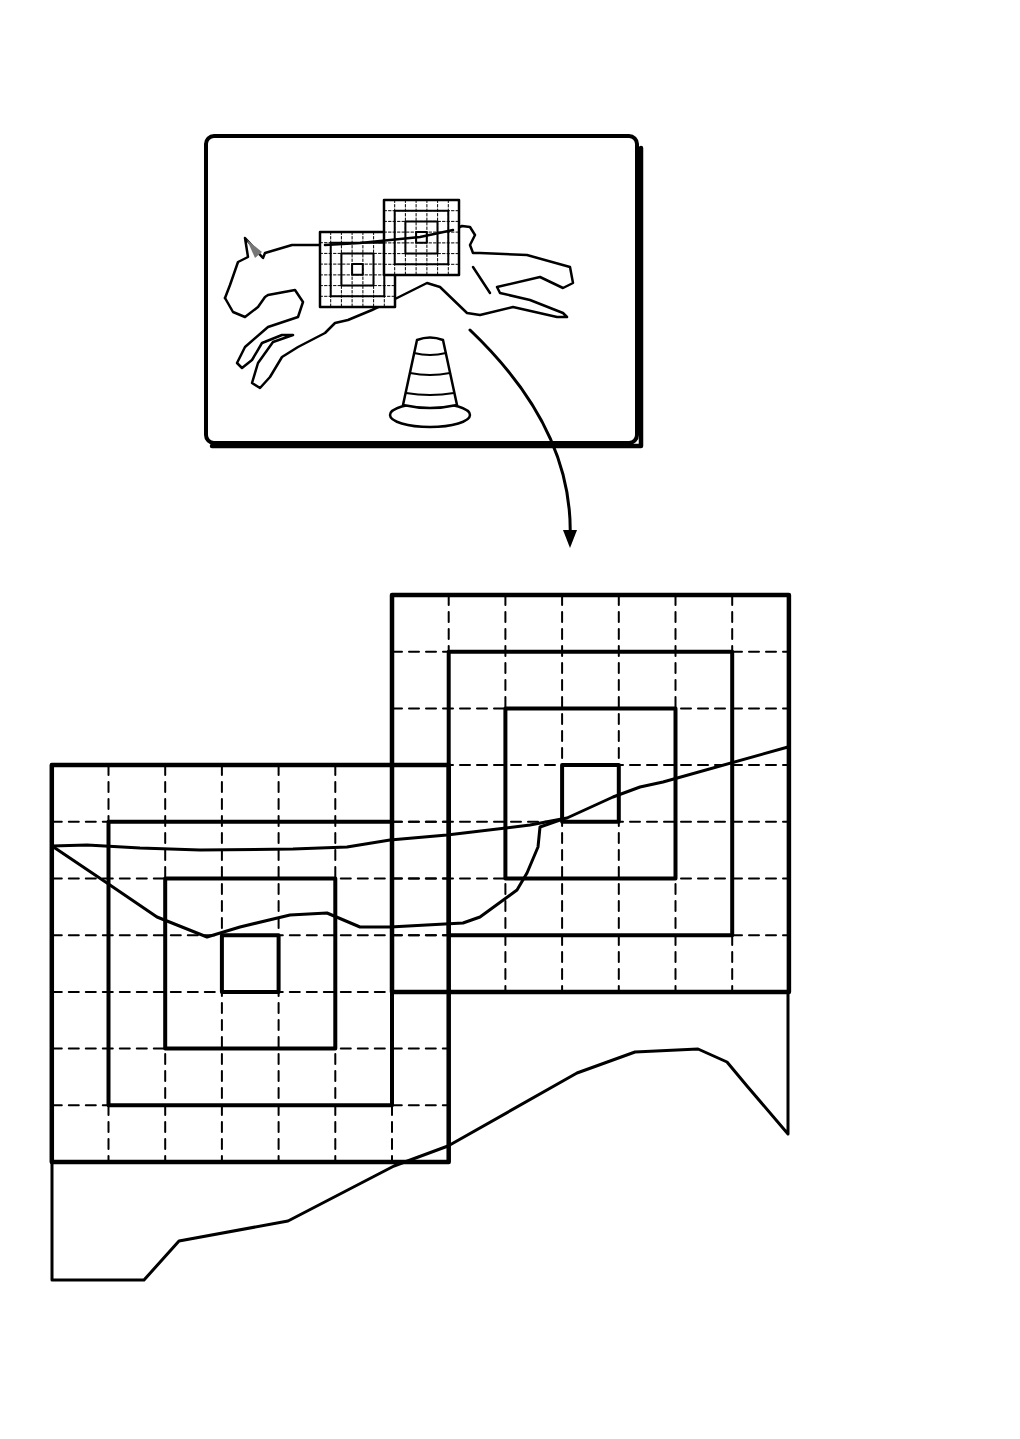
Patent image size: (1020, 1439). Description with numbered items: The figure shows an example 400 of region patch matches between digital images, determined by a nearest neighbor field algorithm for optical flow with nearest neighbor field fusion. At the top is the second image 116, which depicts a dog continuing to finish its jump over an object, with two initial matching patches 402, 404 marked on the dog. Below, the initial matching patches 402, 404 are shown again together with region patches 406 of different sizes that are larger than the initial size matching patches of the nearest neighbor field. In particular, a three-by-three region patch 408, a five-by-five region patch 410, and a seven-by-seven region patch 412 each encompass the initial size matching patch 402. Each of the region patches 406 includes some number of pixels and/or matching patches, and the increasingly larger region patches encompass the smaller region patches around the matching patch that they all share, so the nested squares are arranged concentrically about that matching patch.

The example of region patch matches 400 is at (655, 74).
The second image 116 is at (493, 491).
The initial matching patch 402 is at (418, 238).
The initial matching patch 404 is at (355, 265).
The region patches 406 is at (336, 690).
The 3×3 region patch 408 is at (676, 707).
The 5×5 region patch 410 is at (652, 650).
The 7×7 region patch 412 is at (636, 594).